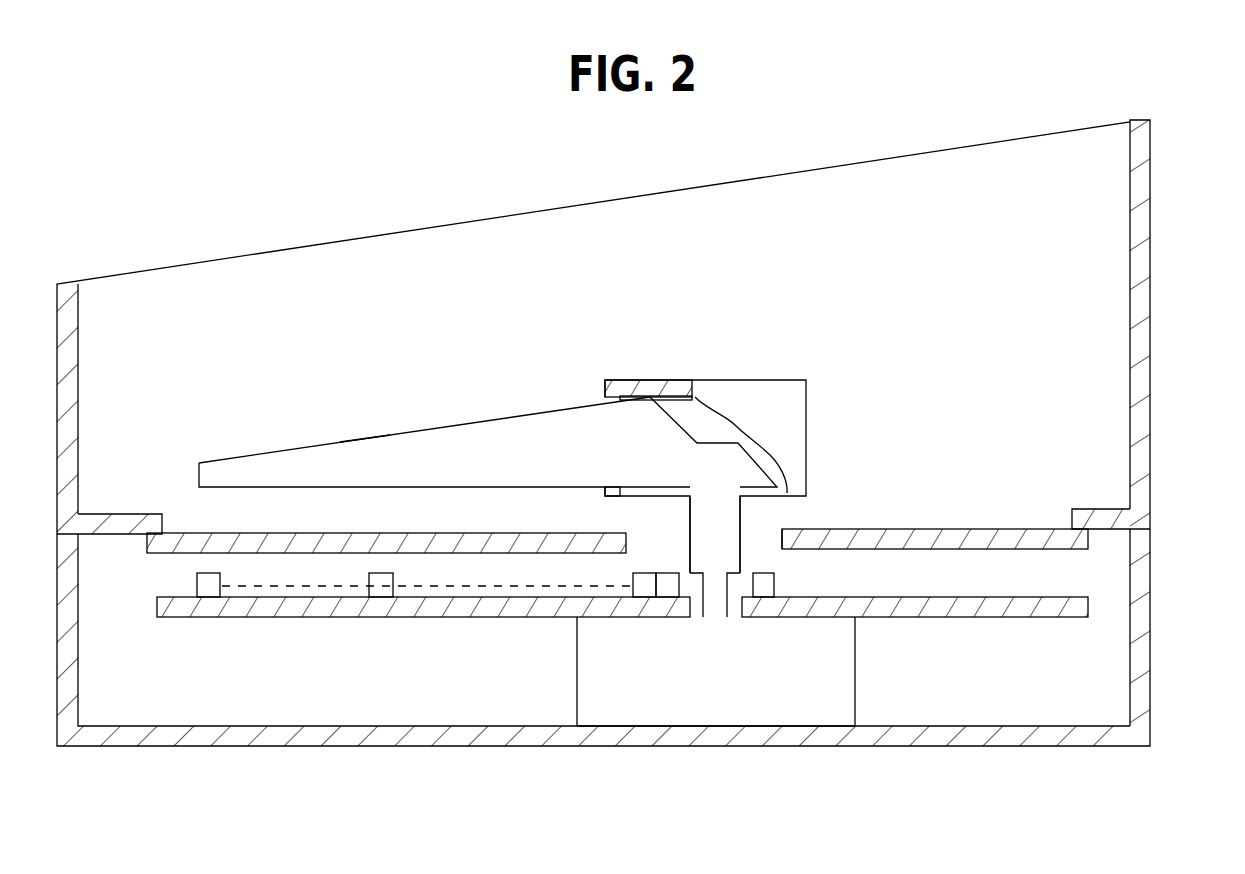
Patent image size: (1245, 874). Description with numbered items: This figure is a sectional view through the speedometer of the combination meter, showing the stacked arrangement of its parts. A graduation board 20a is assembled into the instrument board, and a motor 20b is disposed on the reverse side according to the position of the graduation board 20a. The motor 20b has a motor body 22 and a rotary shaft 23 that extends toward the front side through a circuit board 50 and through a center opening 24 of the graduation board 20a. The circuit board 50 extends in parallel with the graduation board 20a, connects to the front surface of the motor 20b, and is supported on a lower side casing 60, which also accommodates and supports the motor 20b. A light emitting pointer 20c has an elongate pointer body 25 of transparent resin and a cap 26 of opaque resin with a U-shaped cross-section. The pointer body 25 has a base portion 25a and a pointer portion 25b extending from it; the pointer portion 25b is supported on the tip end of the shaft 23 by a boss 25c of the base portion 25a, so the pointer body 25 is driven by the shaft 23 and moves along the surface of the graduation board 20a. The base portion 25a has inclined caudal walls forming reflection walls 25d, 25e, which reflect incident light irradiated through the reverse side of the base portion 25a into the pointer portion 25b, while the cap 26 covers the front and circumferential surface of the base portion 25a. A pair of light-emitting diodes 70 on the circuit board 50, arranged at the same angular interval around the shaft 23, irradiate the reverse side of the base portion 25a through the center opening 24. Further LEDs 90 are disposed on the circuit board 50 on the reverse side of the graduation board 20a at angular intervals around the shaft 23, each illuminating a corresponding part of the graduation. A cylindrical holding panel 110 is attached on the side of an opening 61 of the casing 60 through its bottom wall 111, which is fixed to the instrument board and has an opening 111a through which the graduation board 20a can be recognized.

The holding panel 110 is at (1163, 130).
The bottom wall 111 is at (1094, 510).
The opening 111a is at (163, 518).
The lower side casing 60 is at (1158, 743).
The opening 61 is at (1115, 550).
The graduation board 20a is at (913, 527).
The motor 20b is at (863, 683).
The light emitting pointer 20c is at (575, 382).
The motor body 22 is at (730, 707).
The rotary shaft 23 is at (708, 600).
The center opening 24 is at (780, 540).
The pointer body 25 is at (433, 425).
The base portion 25a is at (648, 420).
The pointer portion 25b is at (367, 453).
The boss 25c is at (723, 527).
The reflection wall 25d is at (678, 422).
The reflection wall 25e is at (773, 457).
The cap 26 is at (773, 380).
The circuit board 50 is at (1054, 620).
The light-emitting diode 70 is at (667, 572).
The light-emitting diode 90 is at (205, 573).